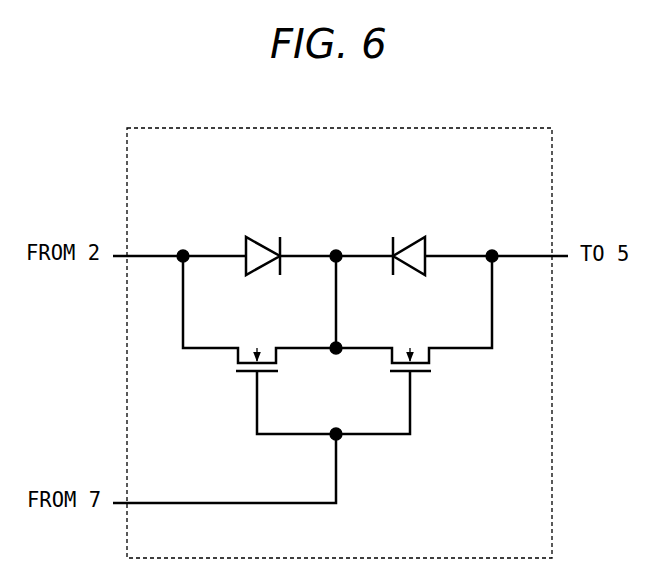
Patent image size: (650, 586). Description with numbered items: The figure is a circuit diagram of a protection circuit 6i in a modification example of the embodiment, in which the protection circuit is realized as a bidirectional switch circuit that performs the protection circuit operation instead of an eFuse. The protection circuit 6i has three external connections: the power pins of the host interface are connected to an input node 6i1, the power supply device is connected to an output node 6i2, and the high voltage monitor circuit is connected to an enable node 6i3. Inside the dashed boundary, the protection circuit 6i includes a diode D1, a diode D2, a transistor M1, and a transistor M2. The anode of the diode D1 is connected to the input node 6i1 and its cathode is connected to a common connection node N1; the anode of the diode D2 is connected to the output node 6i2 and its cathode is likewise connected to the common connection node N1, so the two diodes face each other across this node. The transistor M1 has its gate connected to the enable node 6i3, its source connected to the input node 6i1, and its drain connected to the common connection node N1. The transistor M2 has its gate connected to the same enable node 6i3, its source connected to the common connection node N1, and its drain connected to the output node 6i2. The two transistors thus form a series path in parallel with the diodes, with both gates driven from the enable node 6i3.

The protection circuit 6i is at (488, 128).
The input node 6i1 is at (118, 268).
The output node 6i2 is at (557, 270).
The enable node 6i3 is at (118, 517).
The diode D1 is at (288, 244).
The diode D2 is at (437, 245).
The common connection node N1 is at (345, 245).
The transistor M1 is at (232, 382).
The transistor M2 is at (425, 383).